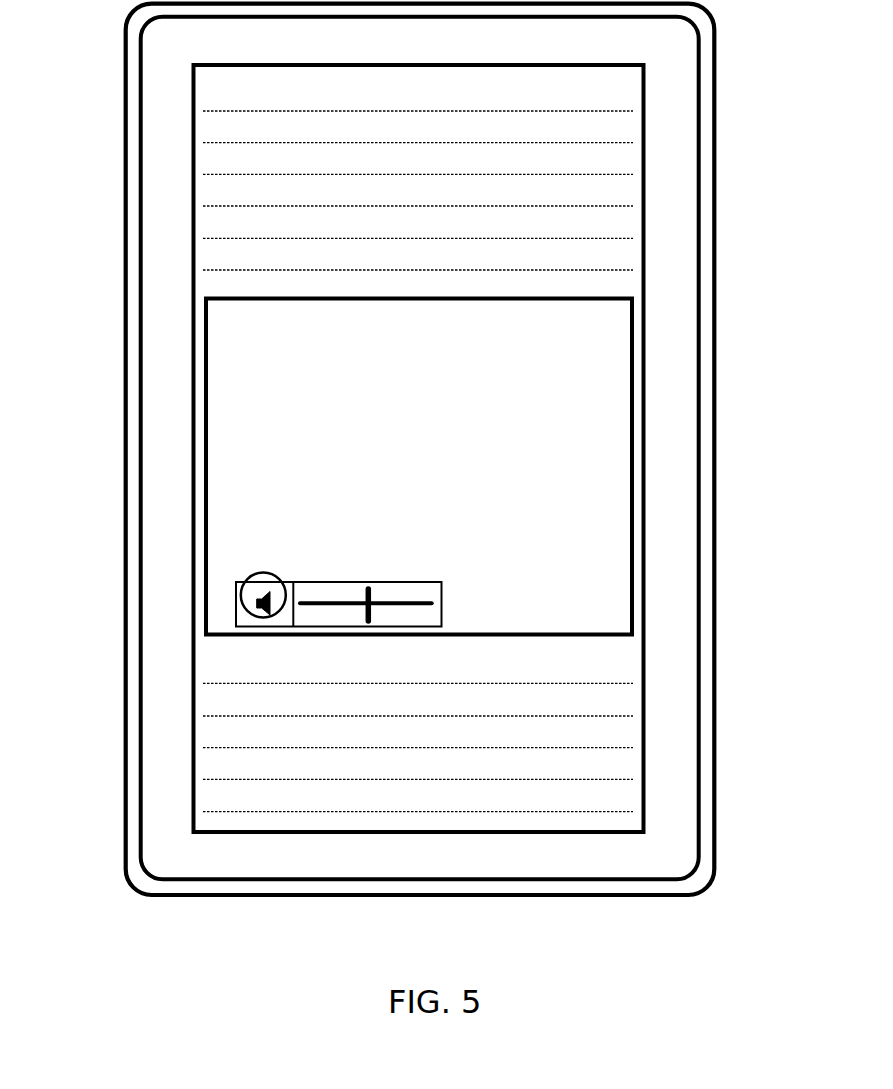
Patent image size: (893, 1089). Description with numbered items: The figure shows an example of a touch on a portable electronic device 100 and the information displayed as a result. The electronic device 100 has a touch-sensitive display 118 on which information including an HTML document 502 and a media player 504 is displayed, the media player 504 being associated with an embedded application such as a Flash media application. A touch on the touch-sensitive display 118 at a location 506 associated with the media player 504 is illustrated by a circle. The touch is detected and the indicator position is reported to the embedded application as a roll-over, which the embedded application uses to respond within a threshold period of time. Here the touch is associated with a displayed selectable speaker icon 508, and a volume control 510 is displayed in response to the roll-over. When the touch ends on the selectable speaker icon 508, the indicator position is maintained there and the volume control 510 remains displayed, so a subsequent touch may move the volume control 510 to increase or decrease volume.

The electronic device 100 is at (731, 938).
The touch-sensitive display 118 is at (700, 83).
The HTML document 502 is at (620, 167).
The media player 504 is at (621, 434).
The location 506 is at (245, 598).
The selectable speaker icon 508 is at (238, 615).
The volume control 510 is at (443, 593).